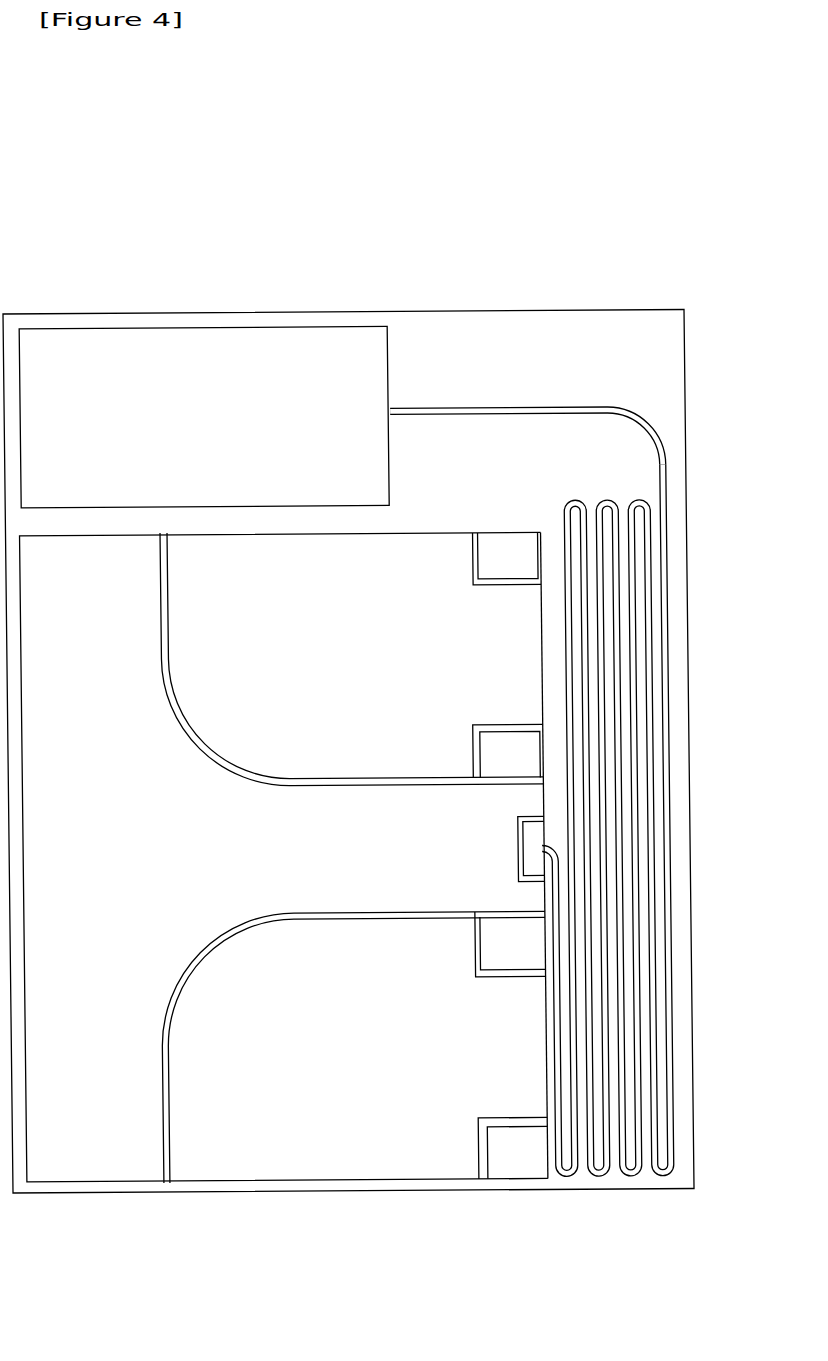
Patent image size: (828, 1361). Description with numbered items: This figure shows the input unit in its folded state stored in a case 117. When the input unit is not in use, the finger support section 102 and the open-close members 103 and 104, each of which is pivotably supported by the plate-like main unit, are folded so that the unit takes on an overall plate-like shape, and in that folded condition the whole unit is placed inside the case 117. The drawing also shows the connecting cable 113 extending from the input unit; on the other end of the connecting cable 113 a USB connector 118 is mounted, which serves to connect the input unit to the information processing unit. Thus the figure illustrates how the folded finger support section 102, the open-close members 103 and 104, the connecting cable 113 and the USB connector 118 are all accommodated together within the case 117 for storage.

The finger support section 102 is at (90, 1151).
The open-close member 103 is at (420, 1150).
The open-close member 104 is at (233, 733).
The connecting cable 113 is at (620, 412).
The case 117 is at (481, 341).
The USB connector 118 is at (118, 363).